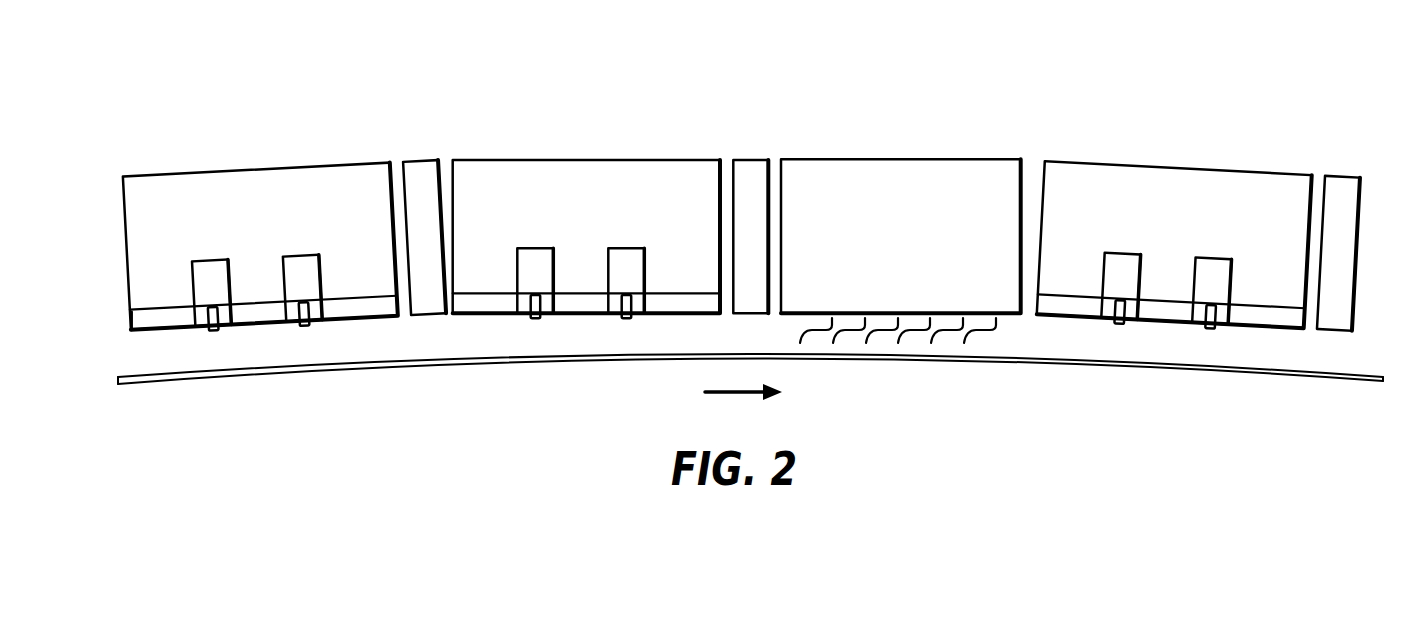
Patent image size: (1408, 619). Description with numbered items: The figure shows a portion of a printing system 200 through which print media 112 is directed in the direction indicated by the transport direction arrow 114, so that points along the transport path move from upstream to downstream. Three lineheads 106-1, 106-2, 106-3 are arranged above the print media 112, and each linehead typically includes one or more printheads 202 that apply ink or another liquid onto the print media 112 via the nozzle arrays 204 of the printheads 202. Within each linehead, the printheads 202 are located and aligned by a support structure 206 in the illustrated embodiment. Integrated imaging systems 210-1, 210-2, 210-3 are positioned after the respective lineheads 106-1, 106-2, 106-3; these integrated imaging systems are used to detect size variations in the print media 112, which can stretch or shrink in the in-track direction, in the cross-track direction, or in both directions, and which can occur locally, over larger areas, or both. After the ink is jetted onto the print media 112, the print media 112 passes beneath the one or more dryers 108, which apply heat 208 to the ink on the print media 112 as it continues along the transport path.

The printing system 200 is at (858, 46).
The linehead 106-1 is at (268, 166).
The linehead 106-2 is at (597, 158).
The linehead 106-3 is at (1190, 167).
The integrated imaging system 210-1 is at (427, 157).
The integrated imaging system 210-2 is at (753, 158).
The integrated imaging system 210-3 is at (1343, 175).
The dryer 108 is at (907, 156).
The printhead 202 is at (218, 260).
The nozzle array 204 is at (214, 333).
The support structure 206 is at (131, 325).
The heat 208 is at (1000, 339).
The print media 112 is at (1335, 372).
The transport direction arrow 114 is at (736, 394).